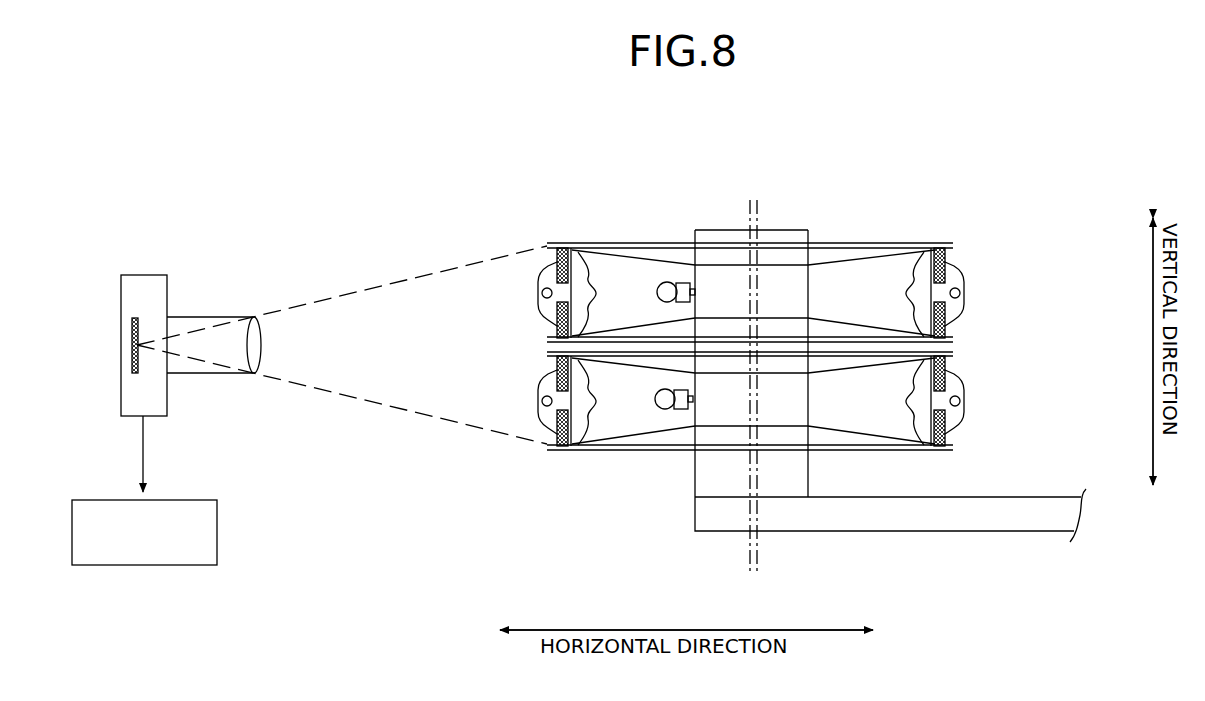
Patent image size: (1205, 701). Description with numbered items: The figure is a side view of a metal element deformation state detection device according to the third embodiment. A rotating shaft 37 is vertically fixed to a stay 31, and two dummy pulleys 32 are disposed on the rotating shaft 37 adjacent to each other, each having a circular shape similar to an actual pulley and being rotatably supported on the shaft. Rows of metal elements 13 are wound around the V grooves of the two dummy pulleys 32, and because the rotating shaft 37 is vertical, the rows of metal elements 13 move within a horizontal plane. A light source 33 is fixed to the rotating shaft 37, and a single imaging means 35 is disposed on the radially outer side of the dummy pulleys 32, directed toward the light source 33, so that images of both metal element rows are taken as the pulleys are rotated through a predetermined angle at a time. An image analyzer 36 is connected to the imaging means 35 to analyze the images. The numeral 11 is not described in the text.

The clamp 11 is at (978, 273).
The metal element 13 is at (528, 268).
The stay 31 is at (960, 523).
The dummy pulley 32 is at (853, 240).
The light source 33 is at (664, 288).
The imaging means 35 is at (147, 283).
The image analyzer 36 is at (172, 565).
The rotating shaft 37 is at (798, 470).